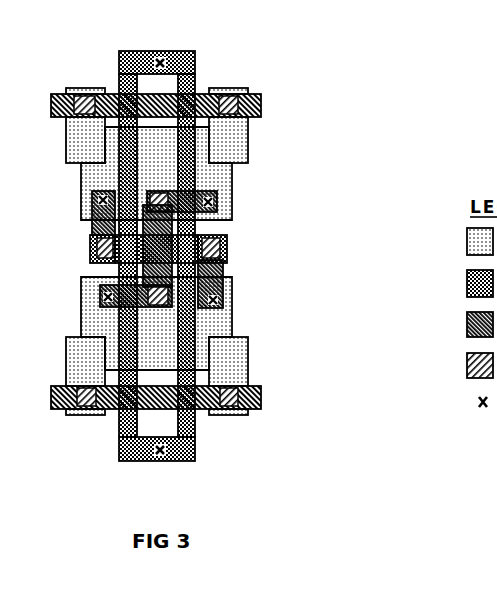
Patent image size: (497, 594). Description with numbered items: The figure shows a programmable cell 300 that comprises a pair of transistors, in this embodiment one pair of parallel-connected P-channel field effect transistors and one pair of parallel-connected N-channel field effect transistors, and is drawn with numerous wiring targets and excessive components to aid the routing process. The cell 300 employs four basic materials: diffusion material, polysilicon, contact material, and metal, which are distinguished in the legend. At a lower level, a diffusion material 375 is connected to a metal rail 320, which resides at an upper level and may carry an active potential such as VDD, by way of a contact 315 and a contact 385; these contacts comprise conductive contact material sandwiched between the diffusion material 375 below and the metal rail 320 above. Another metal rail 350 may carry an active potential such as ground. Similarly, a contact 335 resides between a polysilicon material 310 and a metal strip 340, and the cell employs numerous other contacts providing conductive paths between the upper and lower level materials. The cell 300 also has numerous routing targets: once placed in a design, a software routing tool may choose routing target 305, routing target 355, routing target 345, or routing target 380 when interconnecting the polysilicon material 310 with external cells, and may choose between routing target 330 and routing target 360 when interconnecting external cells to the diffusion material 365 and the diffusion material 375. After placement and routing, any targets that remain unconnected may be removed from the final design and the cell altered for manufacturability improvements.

The cell 300 is at (241, 255).
The routing target 305 is at (163, 57).
The polysilicon material 310 is at (197, 63).
The contact 315 is at (227, 97).
The metal rail 320 is at (261, 105).
The routing target 330 is at (217, 193).
The contact 335 is at (218, 252).
The metal strip 340 is at (223, 270).
The routing target 345 is at (223, 296).
The metal rail 350 is at (262, 386).
The routing target 355 is at (153, 456).
The routing target 360 is at (100, 298).
The diffusion material 365 is at (173, 351).
The diffusion material 375 is at (173, 155).
The routing target 380 is at (96, 197).
The contact 385 is at (80, 97).